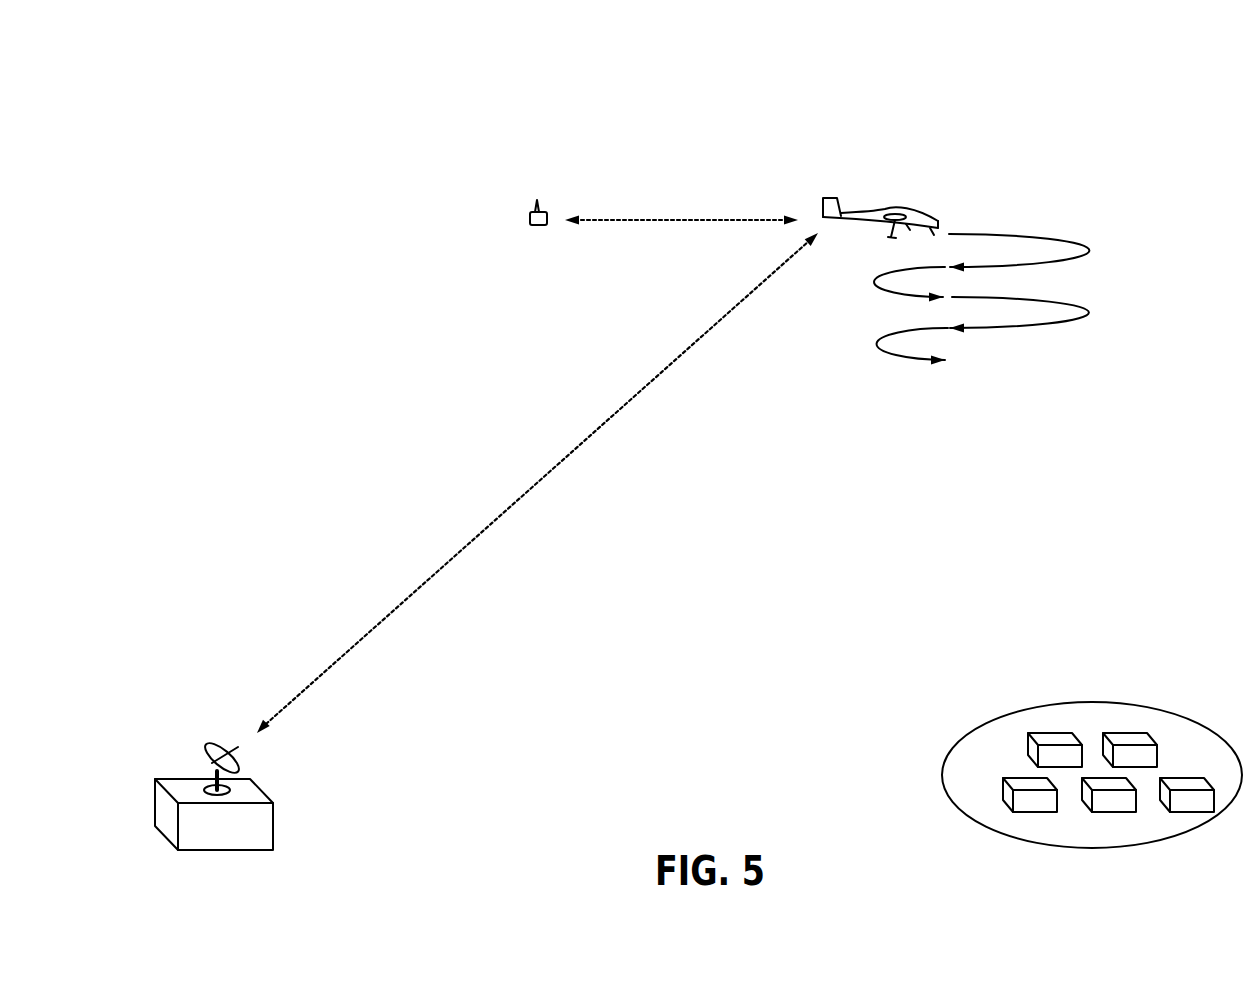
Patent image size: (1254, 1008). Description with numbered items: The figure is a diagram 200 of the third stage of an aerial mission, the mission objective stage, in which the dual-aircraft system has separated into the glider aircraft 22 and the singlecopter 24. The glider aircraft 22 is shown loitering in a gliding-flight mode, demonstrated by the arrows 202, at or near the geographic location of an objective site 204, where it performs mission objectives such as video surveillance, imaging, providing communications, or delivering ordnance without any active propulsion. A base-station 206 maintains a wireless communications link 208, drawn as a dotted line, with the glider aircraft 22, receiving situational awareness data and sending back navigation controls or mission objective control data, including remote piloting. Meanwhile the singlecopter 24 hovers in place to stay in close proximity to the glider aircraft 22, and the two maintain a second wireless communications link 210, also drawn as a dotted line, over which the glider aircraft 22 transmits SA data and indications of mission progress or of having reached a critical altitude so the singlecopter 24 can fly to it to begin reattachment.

The diagram 200 is at (233, 71).
The glider aircraft 22 is at (925, 208).
The singlecopter 24 is at (530, 212).
The arrows 202 is at (1105, 226).
The objective site 204 is at (988, 725).
The base-station 206 is at (263, 790).
The communications link 208 is at (542, 480).
The communications link 210 is at (678, 220).